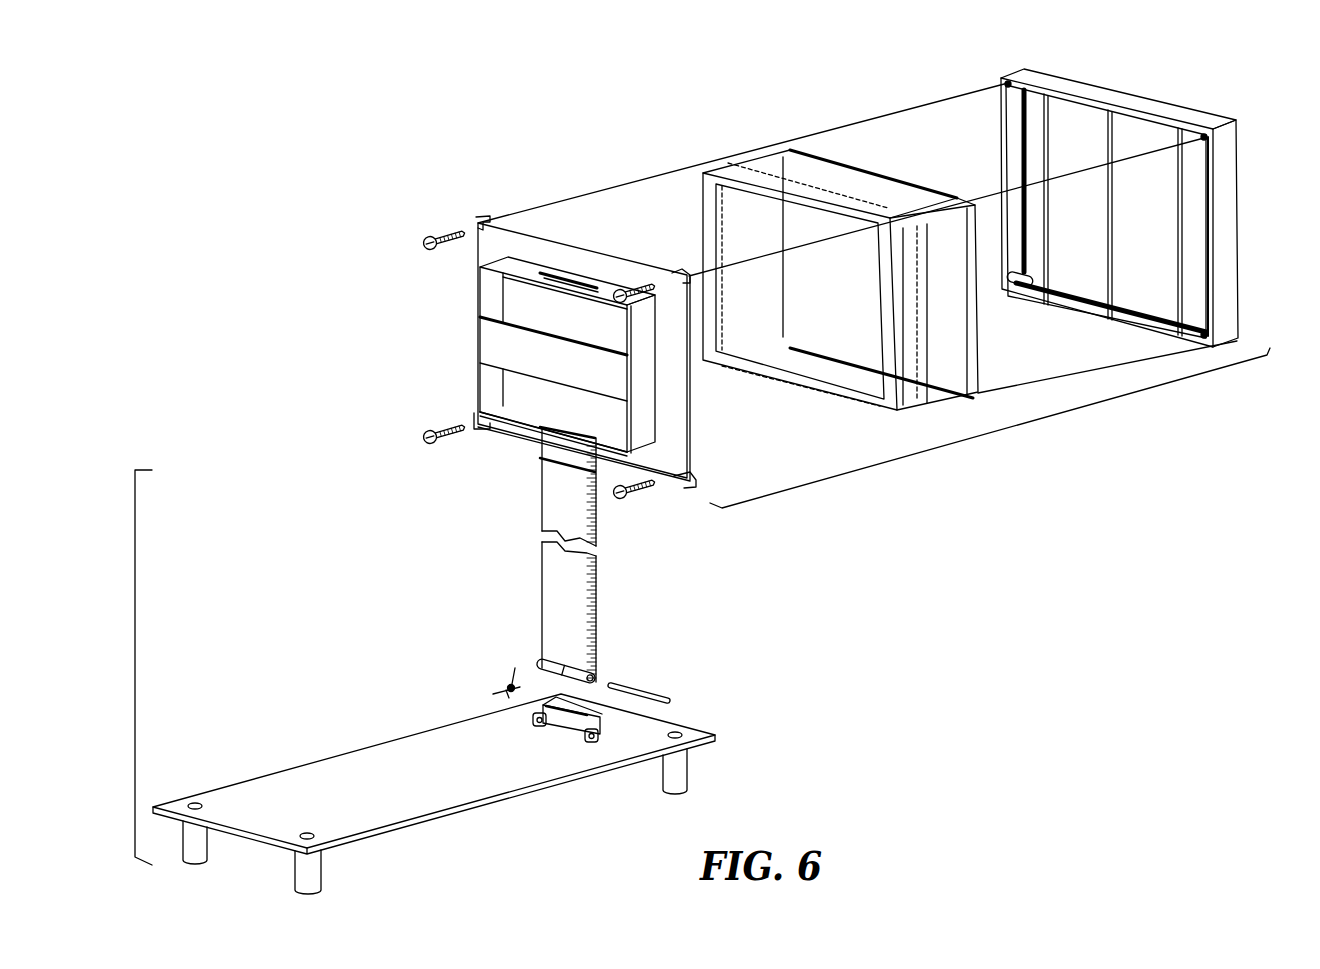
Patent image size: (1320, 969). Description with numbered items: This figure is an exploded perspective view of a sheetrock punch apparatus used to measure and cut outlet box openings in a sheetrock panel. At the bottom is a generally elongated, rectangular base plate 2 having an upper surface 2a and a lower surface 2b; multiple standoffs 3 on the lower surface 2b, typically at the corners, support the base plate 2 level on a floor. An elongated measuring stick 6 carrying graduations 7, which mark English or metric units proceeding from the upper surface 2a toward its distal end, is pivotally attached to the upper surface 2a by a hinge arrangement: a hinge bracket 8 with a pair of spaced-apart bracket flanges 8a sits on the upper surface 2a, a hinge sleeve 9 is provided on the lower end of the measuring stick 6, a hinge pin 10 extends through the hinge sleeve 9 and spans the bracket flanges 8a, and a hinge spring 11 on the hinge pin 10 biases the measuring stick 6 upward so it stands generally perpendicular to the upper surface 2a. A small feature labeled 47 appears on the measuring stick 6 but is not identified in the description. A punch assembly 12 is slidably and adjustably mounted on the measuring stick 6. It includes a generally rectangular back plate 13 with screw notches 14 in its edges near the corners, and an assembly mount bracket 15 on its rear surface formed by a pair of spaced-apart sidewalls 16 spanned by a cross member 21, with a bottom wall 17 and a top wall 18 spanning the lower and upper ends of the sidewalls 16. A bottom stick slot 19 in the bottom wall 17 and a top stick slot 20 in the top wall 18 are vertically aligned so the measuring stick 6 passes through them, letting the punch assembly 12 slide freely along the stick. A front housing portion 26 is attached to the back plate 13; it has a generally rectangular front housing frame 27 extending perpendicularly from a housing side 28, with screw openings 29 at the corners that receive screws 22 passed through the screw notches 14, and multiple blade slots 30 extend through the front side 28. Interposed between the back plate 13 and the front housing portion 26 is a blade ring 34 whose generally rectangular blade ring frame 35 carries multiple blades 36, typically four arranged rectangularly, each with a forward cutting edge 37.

The base plate 2 is at (434, 794).
The upper surface 2a is at (405, 789).
The lower surface 2b is at (430, 822).
The standoffs 3 is at (300, 873).
The measuring stick 6 is at (549, 488).
The graduations 7 is at (598, 563).
The hinge bracket 8 is at (578, 762).
The bracket flanges 8a is at (596, 742).
The hinge sleeve 9 is at (548, 662).
The hinge pin 10 is at (634, 690).
The hinge spring 11 is at (506, 684).
The punch assembly 12 is at (842, 263).
The back plate 13 is at (581, 257).
The screw notches 14 is at (686, 493).
The assembly mount bracket 15 is at (569, 343).
The sidewalls 16 is at (490, 303).
The bottom wall 17 is at (513, 418).
The top wall 18 is at (567, 258).
The bottom stick slot 19 is at (575, 415).
The top stick slot 20 is at (596, 282).
The cross member 21 is at (493, 343).
The screws 22 is at (424, 436).
The front housing portion 26 is at (1123, 204).
The front housing frame 27 is at (1231, 228).
The housing side 28 is at (1089, 147).
The screw openings 29 is at (1212, 140).
The blade slots 30 is at (1020, 128).
The blade ring 34 is at (855, 165).
The blade ring frame 35 is at (905, 308).
The blades 36 is at (907, 192).
The cutting edge 37 is at (983, 328).
The notch 47 is at (569, 536).